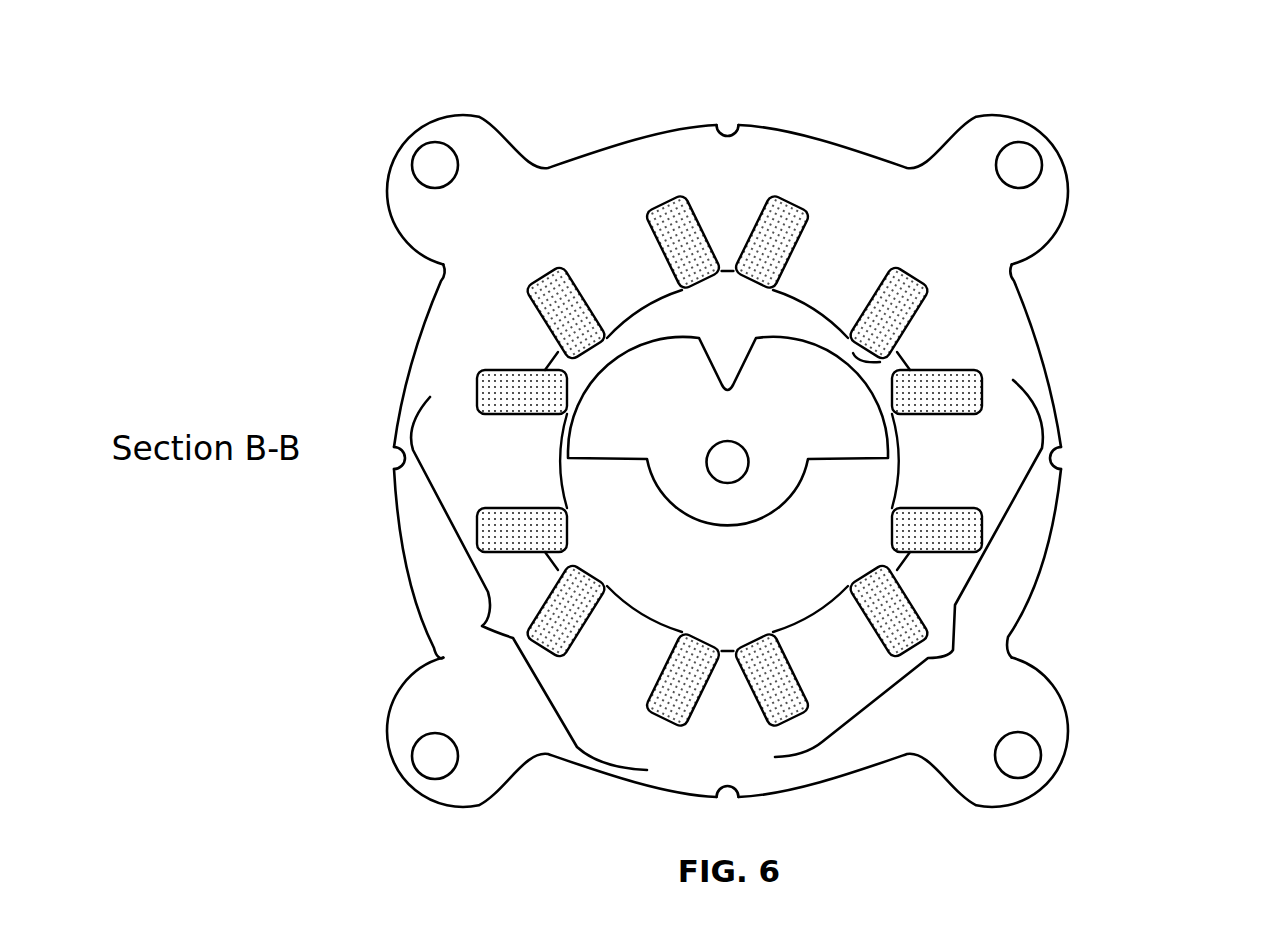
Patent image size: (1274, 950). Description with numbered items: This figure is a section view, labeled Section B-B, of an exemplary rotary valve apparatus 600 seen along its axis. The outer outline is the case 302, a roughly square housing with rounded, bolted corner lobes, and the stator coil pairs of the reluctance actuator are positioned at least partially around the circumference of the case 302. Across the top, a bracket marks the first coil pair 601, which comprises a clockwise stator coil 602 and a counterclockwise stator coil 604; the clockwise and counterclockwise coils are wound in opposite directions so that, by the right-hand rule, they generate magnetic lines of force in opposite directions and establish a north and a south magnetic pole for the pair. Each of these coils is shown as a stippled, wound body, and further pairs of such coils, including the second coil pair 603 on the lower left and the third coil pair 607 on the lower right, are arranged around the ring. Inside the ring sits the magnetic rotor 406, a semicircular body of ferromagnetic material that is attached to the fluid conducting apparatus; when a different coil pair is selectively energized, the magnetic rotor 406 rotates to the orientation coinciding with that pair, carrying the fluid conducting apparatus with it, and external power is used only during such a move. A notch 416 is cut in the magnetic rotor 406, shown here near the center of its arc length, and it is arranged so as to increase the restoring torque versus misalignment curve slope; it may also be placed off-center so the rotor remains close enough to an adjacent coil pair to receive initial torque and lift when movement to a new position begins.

The motor assembly 600 is at (1114, 90).
The case 302 is at (840, 138).
The first coil pair 601 is at (500, 210).
The clockwise stator coil 602 is at (678, 248).
The counterclockwise stator coil 604 is at (778, 248).
The magnetic rotor 406 is at (903, 352).
The notch 416 is at (724, 326).
The second coil pair 603 is at (529, 583).
The third coil pair 607 is at (909, 568).